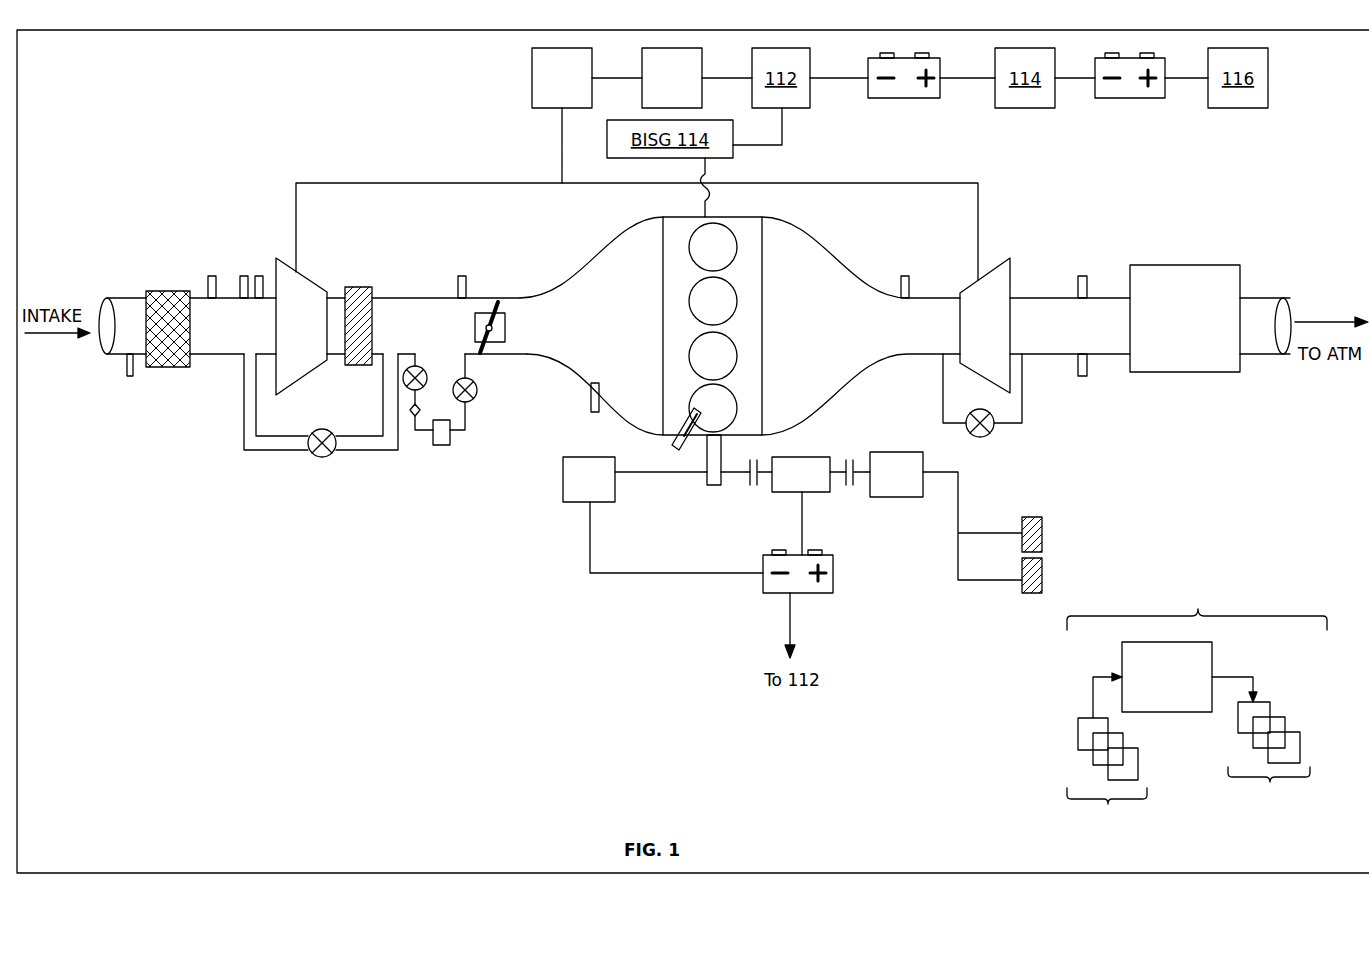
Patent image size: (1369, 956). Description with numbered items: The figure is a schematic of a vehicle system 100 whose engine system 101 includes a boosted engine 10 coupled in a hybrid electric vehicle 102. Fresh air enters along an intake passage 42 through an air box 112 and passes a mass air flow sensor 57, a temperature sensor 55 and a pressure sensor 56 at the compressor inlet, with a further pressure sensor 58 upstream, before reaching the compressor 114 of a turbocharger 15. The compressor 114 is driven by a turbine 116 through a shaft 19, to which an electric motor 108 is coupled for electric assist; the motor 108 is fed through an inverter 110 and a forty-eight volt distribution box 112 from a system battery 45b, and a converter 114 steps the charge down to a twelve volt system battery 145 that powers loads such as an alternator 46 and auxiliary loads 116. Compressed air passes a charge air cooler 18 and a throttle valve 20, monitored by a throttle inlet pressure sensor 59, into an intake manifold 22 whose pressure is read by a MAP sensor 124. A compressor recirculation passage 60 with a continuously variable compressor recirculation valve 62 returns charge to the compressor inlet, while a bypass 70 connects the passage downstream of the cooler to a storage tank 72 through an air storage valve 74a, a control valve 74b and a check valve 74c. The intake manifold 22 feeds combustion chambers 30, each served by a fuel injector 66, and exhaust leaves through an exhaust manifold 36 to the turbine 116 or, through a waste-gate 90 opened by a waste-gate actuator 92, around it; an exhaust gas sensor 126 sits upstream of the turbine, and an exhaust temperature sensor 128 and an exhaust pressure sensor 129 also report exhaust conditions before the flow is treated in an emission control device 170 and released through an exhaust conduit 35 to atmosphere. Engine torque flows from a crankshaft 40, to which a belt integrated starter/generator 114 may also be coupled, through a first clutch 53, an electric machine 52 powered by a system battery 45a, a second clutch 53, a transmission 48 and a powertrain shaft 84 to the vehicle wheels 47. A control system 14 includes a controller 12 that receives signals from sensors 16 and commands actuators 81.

The engine 10 is at (728, 326).
The controller 12 is at (1167, 677).
The control system 14 is at (1197, 705).
The turbocharger 15 is at (328, 219).
The sensors 16 is at (1107, 758).
The charge air cooler 18 is at (357, 287).
The shaft 19 is at (877, 183).
The throttle valve 20 is at (505, 332).
The intake manifold 22 is at (591, 326).
The combustion chambers 30 is at (735, 237).
The exhaust conduit 35 is at (1262, 296).
The exhaust manifold 36 is at (861, 326).
The crankshaft 40 is at (707, 480).
The intake passage 42 is at (117, 358).
The system battery 45a is at (800, 593).
The system battery 45b is at (905, 98).
The alternator 46 is at (589, 479).
The vehicle wheels 47 is at (1022, 520).
The transmission 48 is at (896, 474).
The electric machine 52 is at (788, 492).
The clutches 53 is at (752, 485).
The temperature sensor 55 is at (244, 276).
The pressure sensor 56 is at (259, 276).
The mass air flow sensor 57 is at (212, 276).
The pressure sensor 58 is at (130, 377).
The throttle inlet pressure sensor 59 is at (462, 276).
The compressor recirculation passage 60 is at (244, 420).
The continuously variable compressor recirculation valve 62 is at (312, 456).
The fuel injector 66 is at (666, 448).
The bypass 70 is at (420, 432).
The storage tank 72 is at (452, 444).
The air storage valve 74a is at (424, 370).
The control valve 74b is at (475, 398).
The check valve 74c is at (420, 410).
The actuators 81 is at (1261, 749).
The powertrain shaft 84 is at (958, 478).
The waste-gate 90 is at (943, 408).
The waste-gate actuator 92 is at (988, 435).
The vehicle system 100 is at (367, 625).
The engine system 101 is at (1039, 182).
The vehicle 102 is at (1285, 30).
The electric motor 108 is at (562, 78).
The inverter 110 is at (672, 78).
The 48V distribution box 112 is at (159, 290).
The compressor 114 is at (301, 326).
The turbine 116 is at (985, 325).
The manifold absolute pressure sensor 124 is at (600, 386).
The exhaust gas sensor 126 is at (905, 276).
The exhaust temperature sensor 128 is at (1082, 377).
The exhaust pressure sensor 129 is at (1082, 276).
The 12V system battery 145 is at (1132, 98).
The emission control device 170 is at (1172, 265).